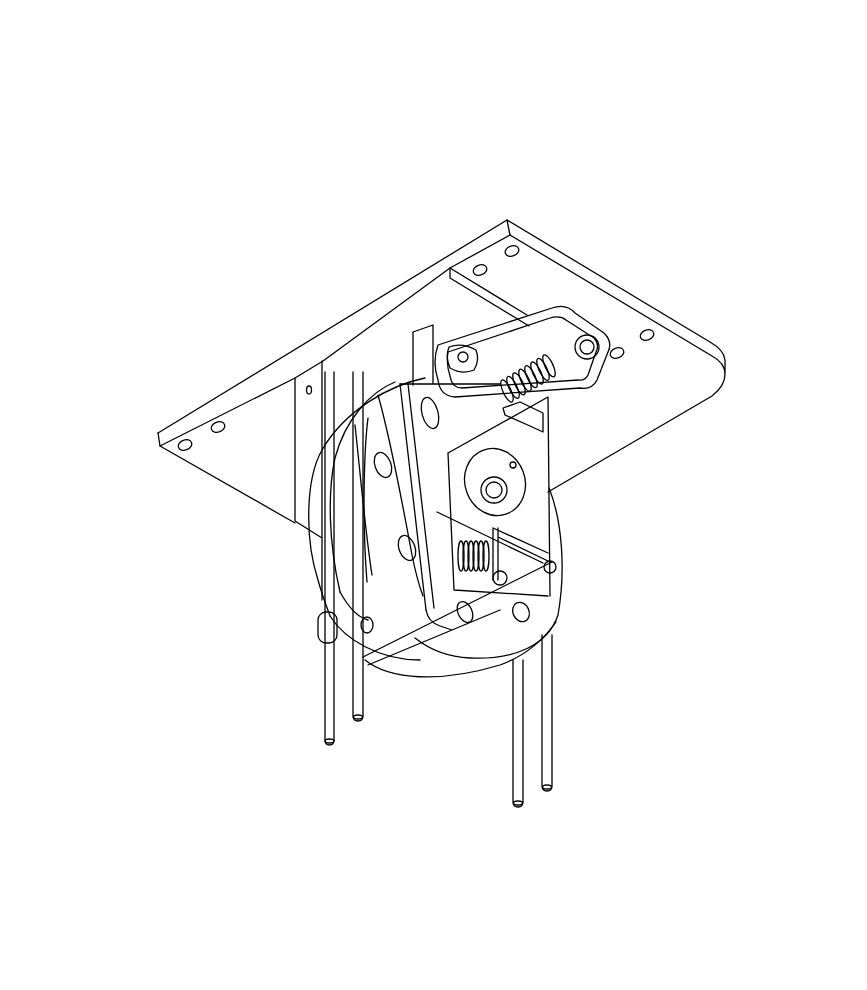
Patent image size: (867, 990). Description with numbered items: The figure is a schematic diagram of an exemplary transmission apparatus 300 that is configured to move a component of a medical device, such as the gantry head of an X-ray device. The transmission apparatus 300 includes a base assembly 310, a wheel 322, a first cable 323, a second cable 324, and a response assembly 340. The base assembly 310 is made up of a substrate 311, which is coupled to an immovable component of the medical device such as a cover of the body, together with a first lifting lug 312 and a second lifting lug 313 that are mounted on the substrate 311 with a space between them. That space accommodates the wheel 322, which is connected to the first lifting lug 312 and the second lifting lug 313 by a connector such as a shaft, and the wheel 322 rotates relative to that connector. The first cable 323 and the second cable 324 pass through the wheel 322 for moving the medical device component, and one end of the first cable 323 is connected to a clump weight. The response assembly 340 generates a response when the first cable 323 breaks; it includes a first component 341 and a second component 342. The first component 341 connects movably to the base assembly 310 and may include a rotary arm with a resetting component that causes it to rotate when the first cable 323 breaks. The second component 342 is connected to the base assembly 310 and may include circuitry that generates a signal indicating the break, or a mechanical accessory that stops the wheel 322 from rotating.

The transmission apparatus 300 is at (463, 35).
The base assembly 310 is at (37, 333).
The substrate 311 is at (353, 378).
The first lifting lug 312 is at (312, 428).
The second lifting lug 313 is at (431, 352).
The wheel 322 is at (295, 522).
The first cable 323 is at (325, 673).
The second cable 324 is at (363, 700).
The response assembly 340 is at (717, 488).
The first component 341 is at (556, 569).
The second component 342 is at (552, 418).